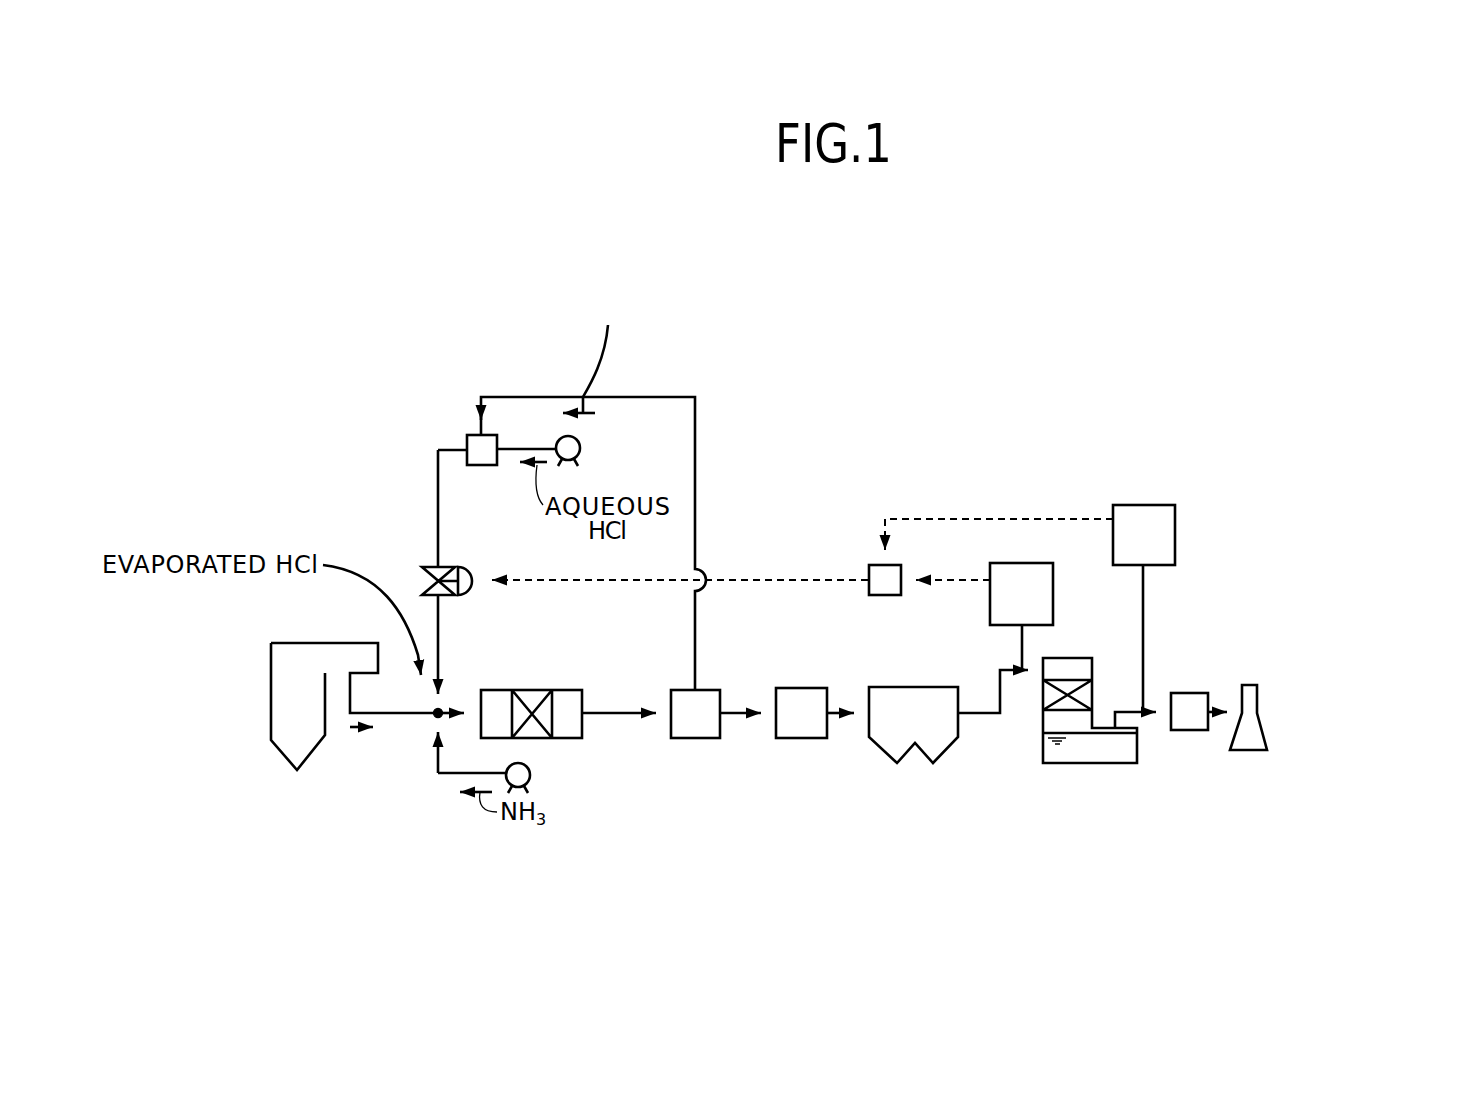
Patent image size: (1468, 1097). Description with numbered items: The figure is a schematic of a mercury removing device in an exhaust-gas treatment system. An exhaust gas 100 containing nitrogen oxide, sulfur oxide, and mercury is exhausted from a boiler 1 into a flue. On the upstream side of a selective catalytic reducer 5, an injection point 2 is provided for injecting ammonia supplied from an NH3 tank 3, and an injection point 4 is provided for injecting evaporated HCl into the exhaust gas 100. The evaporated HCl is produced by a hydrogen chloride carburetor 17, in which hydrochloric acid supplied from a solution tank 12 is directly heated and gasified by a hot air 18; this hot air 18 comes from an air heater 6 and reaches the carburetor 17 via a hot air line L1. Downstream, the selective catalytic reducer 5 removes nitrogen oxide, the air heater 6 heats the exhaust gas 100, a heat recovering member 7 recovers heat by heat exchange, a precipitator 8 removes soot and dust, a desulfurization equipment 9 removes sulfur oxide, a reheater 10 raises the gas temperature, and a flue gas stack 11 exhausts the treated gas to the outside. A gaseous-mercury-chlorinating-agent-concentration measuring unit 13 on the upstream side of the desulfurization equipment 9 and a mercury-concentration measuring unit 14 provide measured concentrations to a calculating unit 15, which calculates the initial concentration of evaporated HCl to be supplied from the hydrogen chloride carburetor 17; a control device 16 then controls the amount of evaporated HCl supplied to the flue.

The boiler 1 is at (271, 703).
The injection point 2 is at (430, 710).
The NH3 tank 3 is at (531, 776).
The injection point 4 is at (442, 706).
The selective catalytic reducer 5 is at (529, 689).
The air heater 6 is at (685, 740).
The heat recovering member 7 is at (814, 689).
The precipitator 8 is at (942, 688).
The desulfurization equipment 9 is at (1090, 763).
The reheater 10 is at (1194, 693).
The flue gas stack 11 is at (1251, 685).
The solution tank 12 is at (581, 450).
The gaseous-mercury-chlorinating-agent-concentration measuring unit 13 is at (1012, 563).
The mercury-concentration measuring unit 14 is at (1175, 521).
The calculating unit 15 is at (880, 564).
The control device 16 is at (428, 565).
The hydrogen chloride carburetor 17 is at (464, 437).
The hot air 18 is at (608, 341).
The exhaust gas 100 is at (350, 727).
The hot air line L1 is at (698, 421).